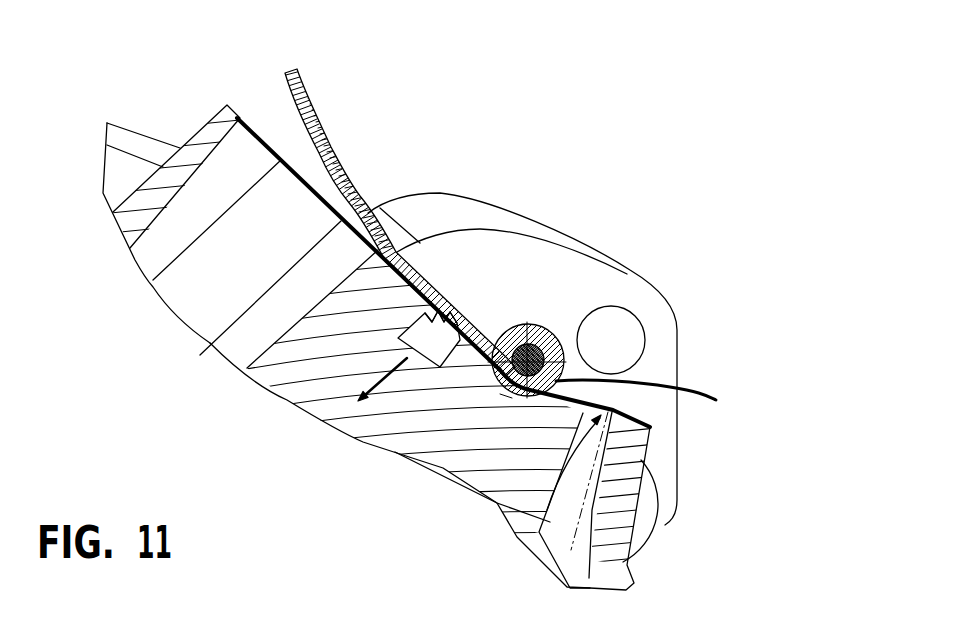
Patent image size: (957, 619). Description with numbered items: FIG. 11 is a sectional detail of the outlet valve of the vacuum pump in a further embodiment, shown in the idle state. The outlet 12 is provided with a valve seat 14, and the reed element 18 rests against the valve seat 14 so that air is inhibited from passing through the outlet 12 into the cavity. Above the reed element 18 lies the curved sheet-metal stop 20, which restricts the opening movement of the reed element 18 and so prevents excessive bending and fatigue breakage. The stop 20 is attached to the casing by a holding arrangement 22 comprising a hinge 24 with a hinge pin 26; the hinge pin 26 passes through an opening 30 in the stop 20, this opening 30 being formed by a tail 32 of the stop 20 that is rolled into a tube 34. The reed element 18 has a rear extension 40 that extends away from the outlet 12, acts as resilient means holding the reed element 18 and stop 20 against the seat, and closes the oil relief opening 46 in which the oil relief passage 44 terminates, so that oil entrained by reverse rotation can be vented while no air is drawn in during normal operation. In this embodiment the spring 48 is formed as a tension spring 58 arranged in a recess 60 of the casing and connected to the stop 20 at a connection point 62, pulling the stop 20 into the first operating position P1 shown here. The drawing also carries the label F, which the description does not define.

The outlet 12 is at (211, 178).
The valve seat 14 is at (236, 115).
The reed element 18 is at (290, 168).
The stop 20 is at (330, 132).
The holding arrangement 22 is at (558, 302).
The hinge 24 is at (562, 326).
The hinge pin 26 is at (657, 398).
The opening 30 is at (565, 486).
The tail 32 is at (508, 387).
The tube 34 is at (522, 324).
The rear extension 40 is at (637, 413).
The oil relief passage 44 is at (597, 492).
The oil relief opening 46 is at (551, 500).
The spring 48 is at (430, 348).
The tension spring 58 is at (425, 325).
The recess 60 is at (400, 330).
The connection point 62 is at (448, 318).
The force F is at (372, 345).
The first operating position P1 is at (629, 107).